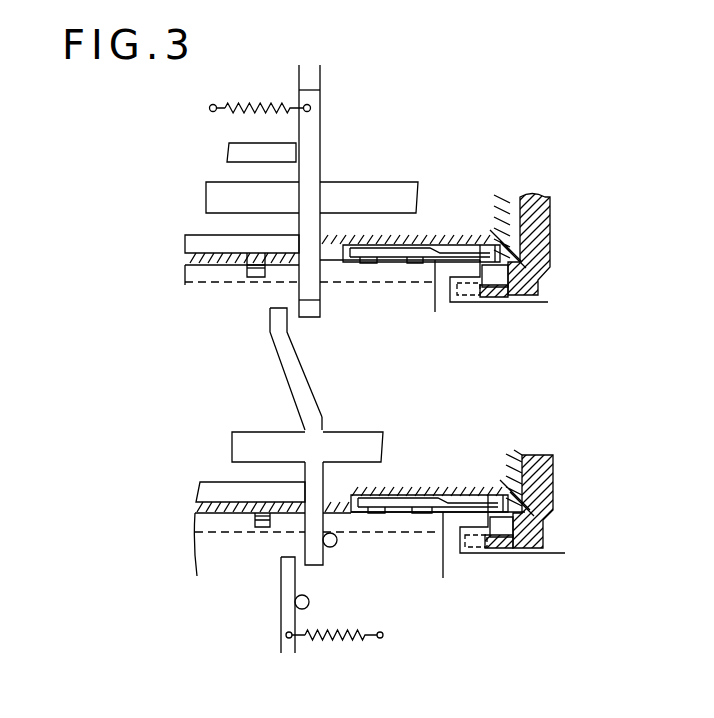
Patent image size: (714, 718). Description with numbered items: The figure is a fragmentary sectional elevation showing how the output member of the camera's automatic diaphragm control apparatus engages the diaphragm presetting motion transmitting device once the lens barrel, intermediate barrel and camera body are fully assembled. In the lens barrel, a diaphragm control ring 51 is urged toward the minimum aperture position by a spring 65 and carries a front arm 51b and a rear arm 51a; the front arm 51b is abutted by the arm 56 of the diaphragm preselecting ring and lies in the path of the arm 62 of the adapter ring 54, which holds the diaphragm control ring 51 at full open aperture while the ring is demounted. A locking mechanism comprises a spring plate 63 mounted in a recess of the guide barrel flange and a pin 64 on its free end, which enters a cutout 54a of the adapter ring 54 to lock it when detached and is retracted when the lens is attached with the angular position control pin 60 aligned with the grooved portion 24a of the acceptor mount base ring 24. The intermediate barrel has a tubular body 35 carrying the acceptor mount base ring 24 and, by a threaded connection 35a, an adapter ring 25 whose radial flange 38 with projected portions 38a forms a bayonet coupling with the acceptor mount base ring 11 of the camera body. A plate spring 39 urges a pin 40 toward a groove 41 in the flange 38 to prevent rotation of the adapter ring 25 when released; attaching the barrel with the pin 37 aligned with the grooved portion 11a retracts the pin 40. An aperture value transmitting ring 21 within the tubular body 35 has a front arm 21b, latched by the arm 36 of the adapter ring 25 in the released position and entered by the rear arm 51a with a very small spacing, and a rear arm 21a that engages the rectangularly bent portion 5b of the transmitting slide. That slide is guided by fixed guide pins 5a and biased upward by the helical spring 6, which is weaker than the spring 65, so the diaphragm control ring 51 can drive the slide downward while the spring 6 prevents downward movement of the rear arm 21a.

The fixed guide pins 5a is at (310, 602).
The rectangularly bent portion 5b is at (284, 624).
The helical spring 6 is at (334, 640).
The acceptor mount base ring 11 is at (192, 518).
The grooved portion 11a is at (263, 527).
The aperture value transmitting ring 21 is at (358, 440).
The rear arm 21a is at (323, 560).
The front arm 21b is at (283, 348).
The acceptor mount base ring 24 is at (190, 242).
The grooved portion 24a is at (256, 277).
The adapter ring 25 is at (548, 492).
The tubular body 35 is at (503, 487).
The threaded connection 35a is at (525, 456).
The arm 36 is at (240, 447).
The angular position control pin 37 is at (255, 518).
The radial flange 38 is at (515, 546).
The projected portions 38a is at (473, 548).
The plate spring 39 is at (447, 497).
The pin 40 is at (476, 497).
The groove 41 is at (502, 538).
The diaphragm control ring 51 is at (378, 190).
The rear arm 51a is at (318, 311).
The front arm 51b is at (322, 100).
The adapter ring 54 is at (545, 208).
The cutout 54a is at (495, 284).
The arm 56 is at (232, 150).
The angular position control pin 60 is at (252, 268).
The arm 62 is at (215, 193).
The spring plate 63 is at (445, 247).
The pin 64 is at (482, 247).
The spring 65 is at (262, 102).